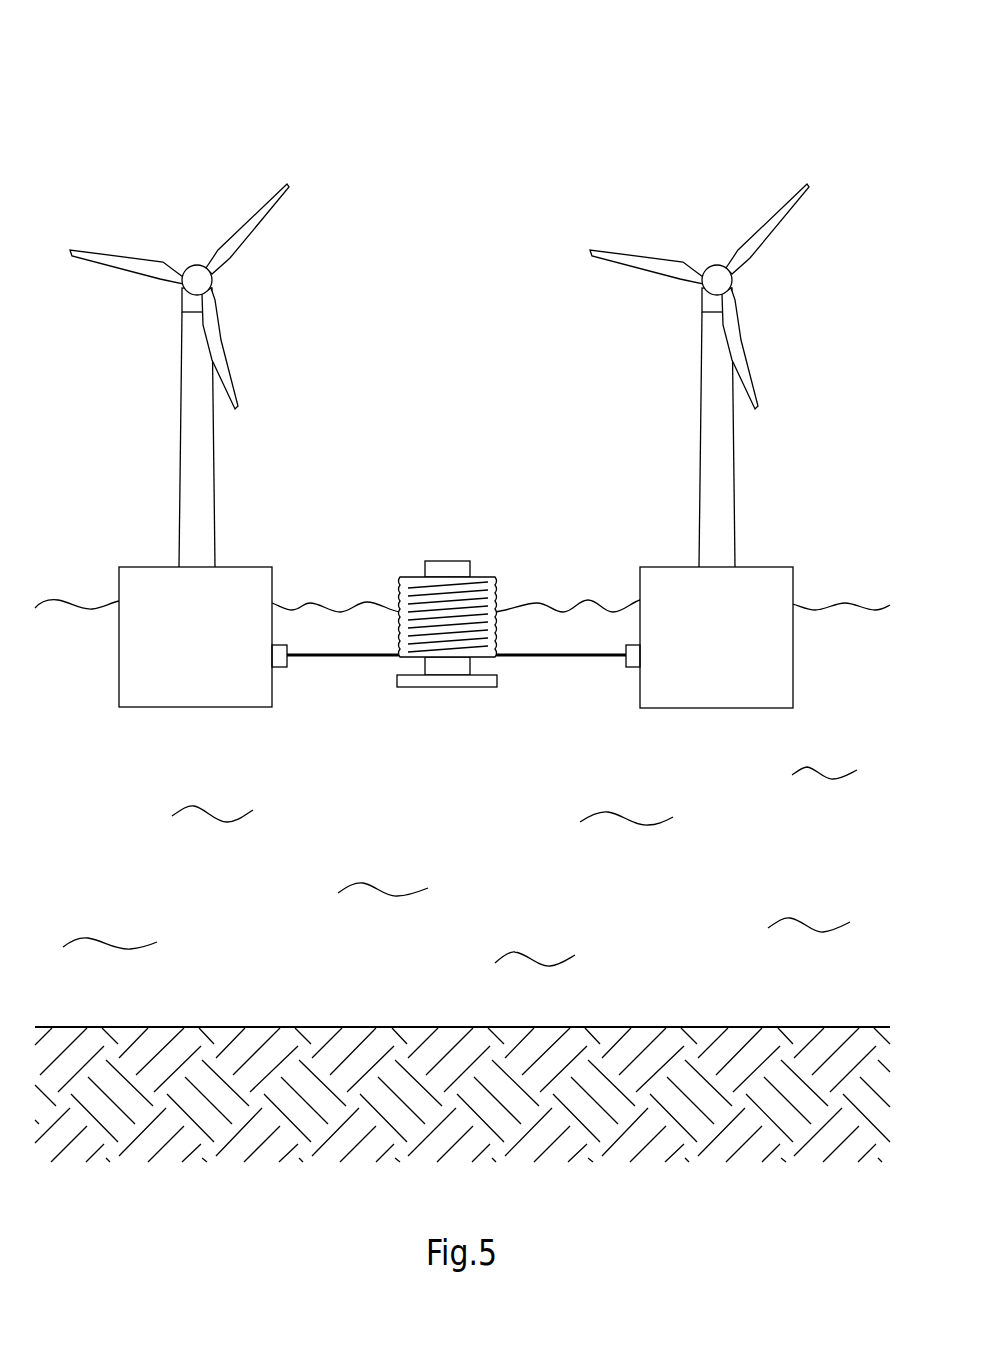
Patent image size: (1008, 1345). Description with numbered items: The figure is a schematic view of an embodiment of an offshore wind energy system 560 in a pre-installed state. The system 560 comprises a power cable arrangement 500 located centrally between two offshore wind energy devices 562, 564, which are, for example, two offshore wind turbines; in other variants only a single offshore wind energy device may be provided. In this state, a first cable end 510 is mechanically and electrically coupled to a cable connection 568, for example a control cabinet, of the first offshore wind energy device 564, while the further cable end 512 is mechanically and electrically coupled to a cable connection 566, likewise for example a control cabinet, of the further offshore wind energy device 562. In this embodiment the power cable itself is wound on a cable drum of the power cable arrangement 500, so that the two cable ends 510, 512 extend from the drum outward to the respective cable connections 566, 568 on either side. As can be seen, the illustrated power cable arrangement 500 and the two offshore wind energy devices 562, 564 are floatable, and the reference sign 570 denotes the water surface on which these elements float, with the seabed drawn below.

The power cable arrangement 500 is at (498, 535).
The first cable end 510 is at (547, 657).
The further cable end 512 is at (357, 657).
The offshore wind energy system 560 is at (501, 182).
The further offshore wind energy device 562 is at (193, 488).
The first offshore wind energy device 564 is at (718, 483).
The cable connection 566 is at (280, 658).
The cable connection 568 is at (635, 658).
The water surface 570 is at (588, 603).